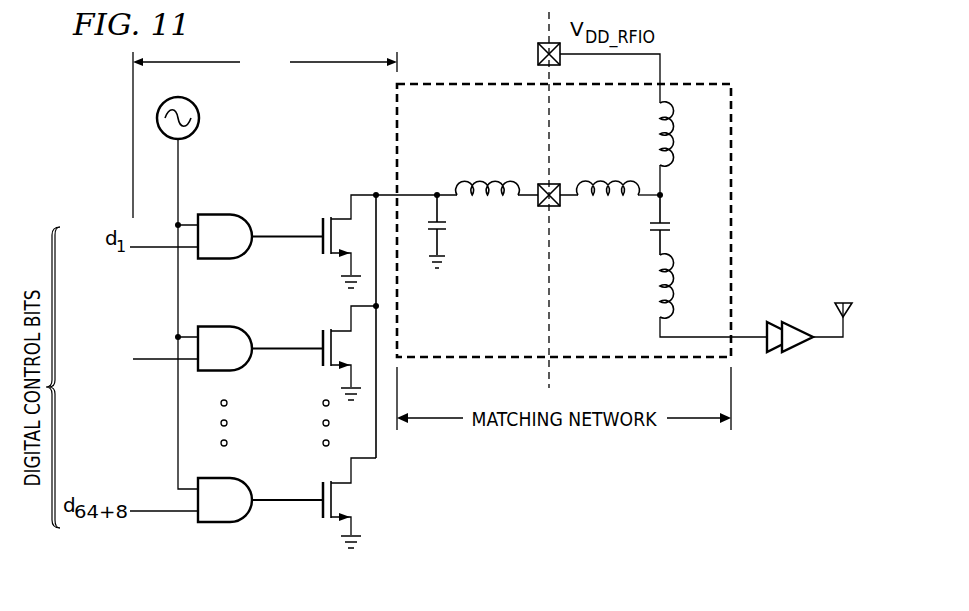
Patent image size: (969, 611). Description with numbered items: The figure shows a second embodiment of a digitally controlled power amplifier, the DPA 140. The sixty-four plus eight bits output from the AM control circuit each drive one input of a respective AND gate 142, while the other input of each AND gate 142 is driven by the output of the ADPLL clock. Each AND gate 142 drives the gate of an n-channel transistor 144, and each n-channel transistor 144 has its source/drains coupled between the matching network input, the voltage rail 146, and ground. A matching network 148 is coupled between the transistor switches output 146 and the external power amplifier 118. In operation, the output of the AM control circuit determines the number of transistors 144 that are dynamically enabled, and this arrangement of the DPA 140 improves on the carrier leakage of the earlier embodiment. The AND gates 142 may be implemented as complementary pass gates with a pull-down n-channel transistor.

The external power amplifier 118 is at (798, 326).
The DPA 140 is at (328, 124).
The AND gate 142 is at (225, 214).
The n-channel transistor 144 is at (321, 225).
The voltage rail 146 is at (418, 193).
The matching network 148 is at (601, 205).